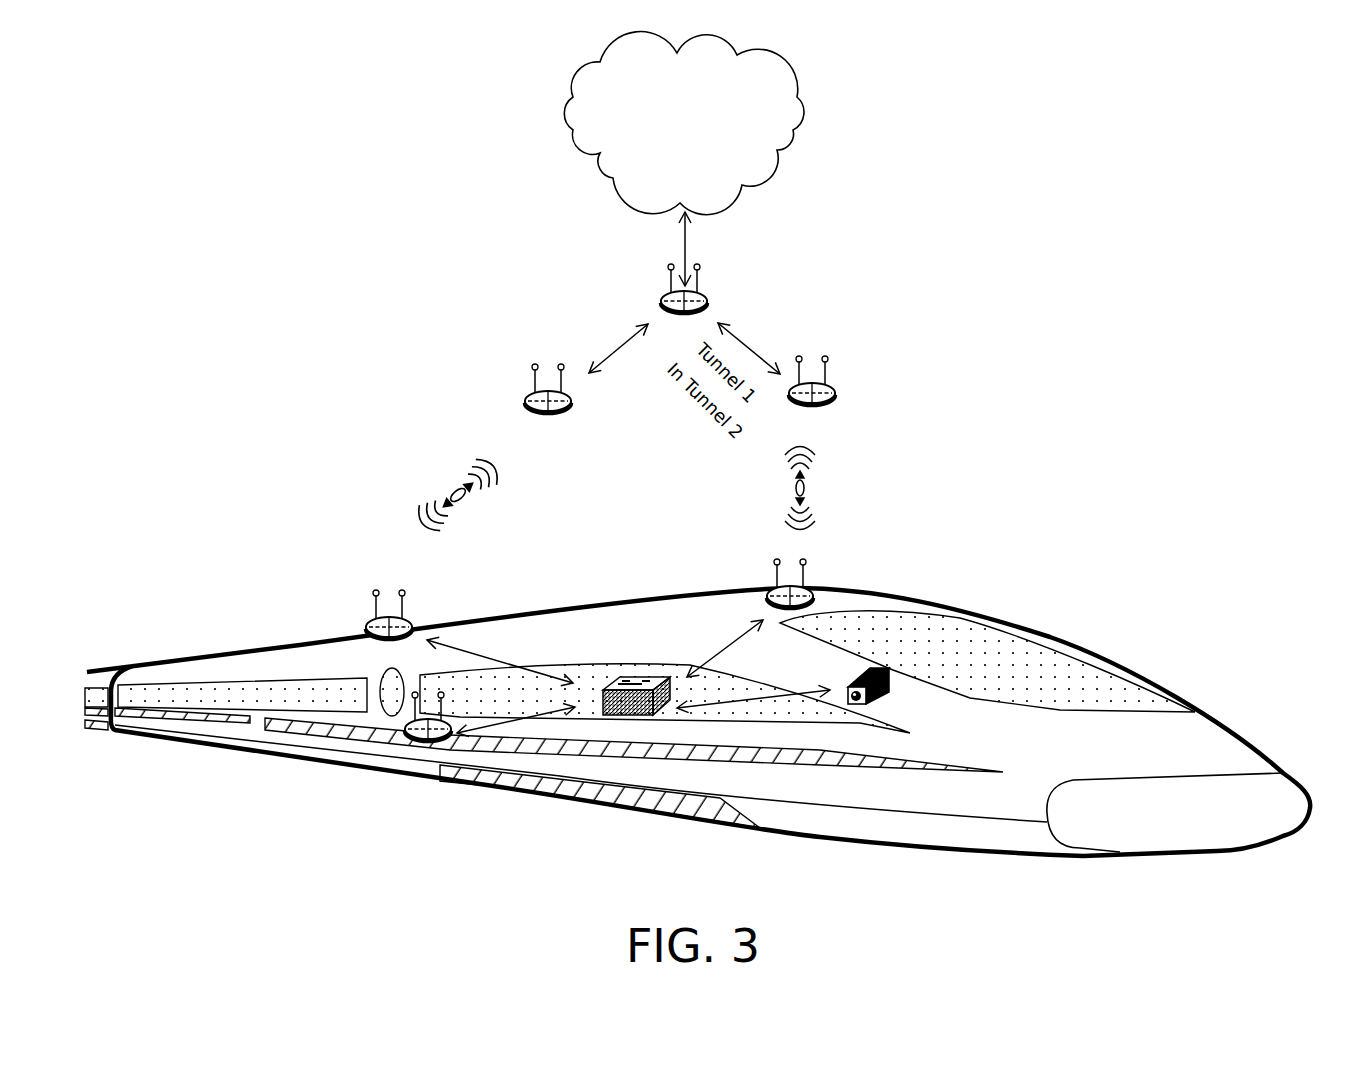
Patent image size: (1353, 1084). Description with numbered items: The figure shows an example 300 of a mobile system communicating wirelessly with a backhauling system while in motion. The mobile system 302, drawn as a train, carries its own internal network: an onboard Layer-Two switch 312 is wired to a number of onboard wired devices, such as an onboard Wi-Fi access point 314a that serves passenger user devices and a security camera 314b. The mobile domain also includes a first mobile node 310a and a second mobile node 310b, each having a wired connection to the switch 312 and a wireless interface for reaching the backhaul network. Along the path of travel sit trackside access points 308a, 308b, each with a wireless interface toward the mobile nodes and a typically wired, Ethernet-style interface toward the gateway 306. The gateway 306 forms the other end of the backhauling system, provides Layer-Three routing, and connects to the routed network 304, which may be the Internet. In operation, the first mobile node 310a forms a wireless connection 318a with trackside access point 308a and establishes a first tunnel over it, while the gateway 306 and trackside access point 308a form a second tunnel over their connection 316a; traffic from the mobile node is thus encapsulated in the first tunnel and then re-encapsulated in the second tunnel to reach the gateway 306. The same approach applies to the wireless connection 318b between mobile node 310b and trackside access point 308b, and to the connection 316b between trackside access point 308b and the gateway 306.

The example of a mobile system communicating wirelessly 300 is at (1238, 122).
The mobile system 302 is at (237, 665).
The L3-routed network 304 is at (667, 163).
The gateway 306 is at (706, 294).
The trackside access point 308a is at (831, 389).
The trackside access point 308b is at (532, 395).
The first mobile node 310a is at (813, 592).
The second mobile node 310b is at (372, 622).
The Layer-2 switch 312 is at (640, 674).
The onboard device 314a is at (428, 745).
The onboard device 314b is at (882, 703).
The connection between trackside access point and gateway 316a is at (732, 306).
The connection between trackside access point and gateway 316b is at (634, 306).
The wireless connection 318a is at (838, 437).
The wireless connection 318b is at (484, 424).